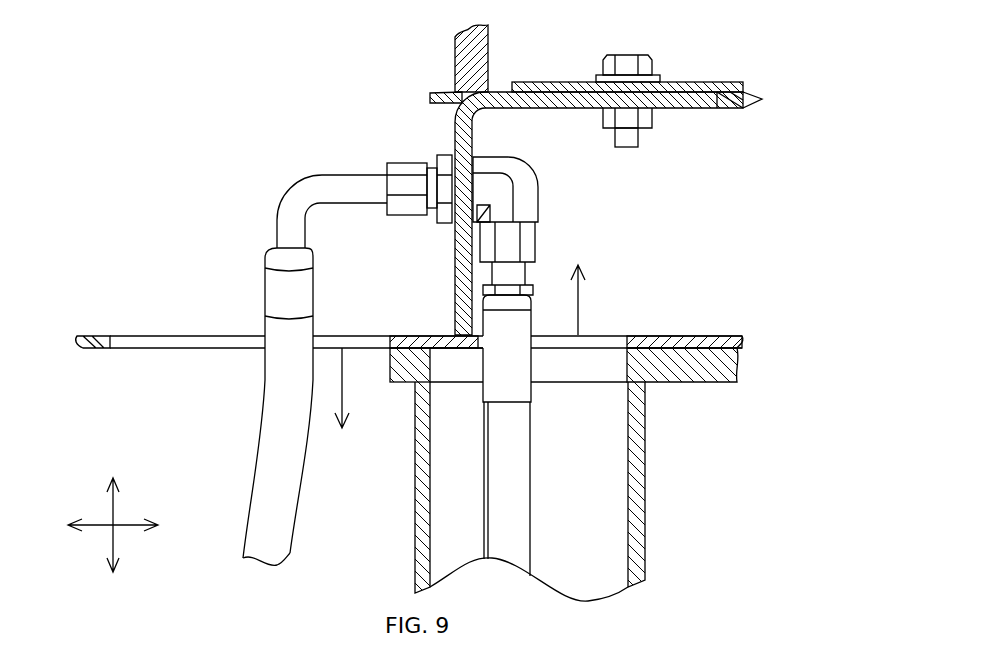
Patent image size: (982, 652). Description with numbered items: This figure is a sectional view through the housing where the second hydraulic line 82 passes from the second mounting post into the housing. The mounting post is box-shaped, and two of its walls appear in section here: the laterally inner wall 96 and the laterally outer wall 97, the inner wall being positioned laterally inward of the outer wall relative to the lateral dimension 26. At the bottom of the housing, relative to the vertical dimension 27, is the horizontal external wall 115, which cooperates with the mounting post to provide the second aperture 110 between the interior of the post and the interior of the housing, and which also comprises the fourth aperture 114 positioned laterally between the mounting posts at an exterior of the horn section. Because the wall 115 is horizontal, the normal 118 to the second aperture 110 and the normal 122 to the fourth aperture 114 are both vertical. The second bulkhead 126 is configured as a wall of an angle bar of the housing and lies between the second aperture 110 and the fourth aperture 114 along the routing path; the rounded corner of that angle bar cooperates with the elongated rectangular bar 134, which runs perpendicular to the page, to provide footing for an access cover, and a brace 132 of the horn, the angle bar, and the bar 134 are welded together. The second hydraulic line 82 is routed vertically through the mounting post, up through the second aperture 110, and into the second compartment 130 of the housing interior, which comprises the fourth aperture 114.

The lateral dimension 26 is at (130, 521).
The vertical dimension 27 is at (114, 542).
The second hydraulic line 82 is at (540, 166).
The laterally inner wall 96 is at (419, 505).
The laterally outer wall 97 is at (647, 489).
The second aperture 110 is at (576, 367).
The fourth aperture 114 is at (190, 344).
The external wall 115 is at (100, 347).
The normal to the second aperture 118 is at (578, 313).
The normal to the fourth aperture 122 is at (343, 390).
The second bulkhead 126 is at (455, 140).
The second compartment 130 is at (108, 336).
The brace 132 is at (482, 61).
The elongated rectangular bar 134 is at (441, 92).